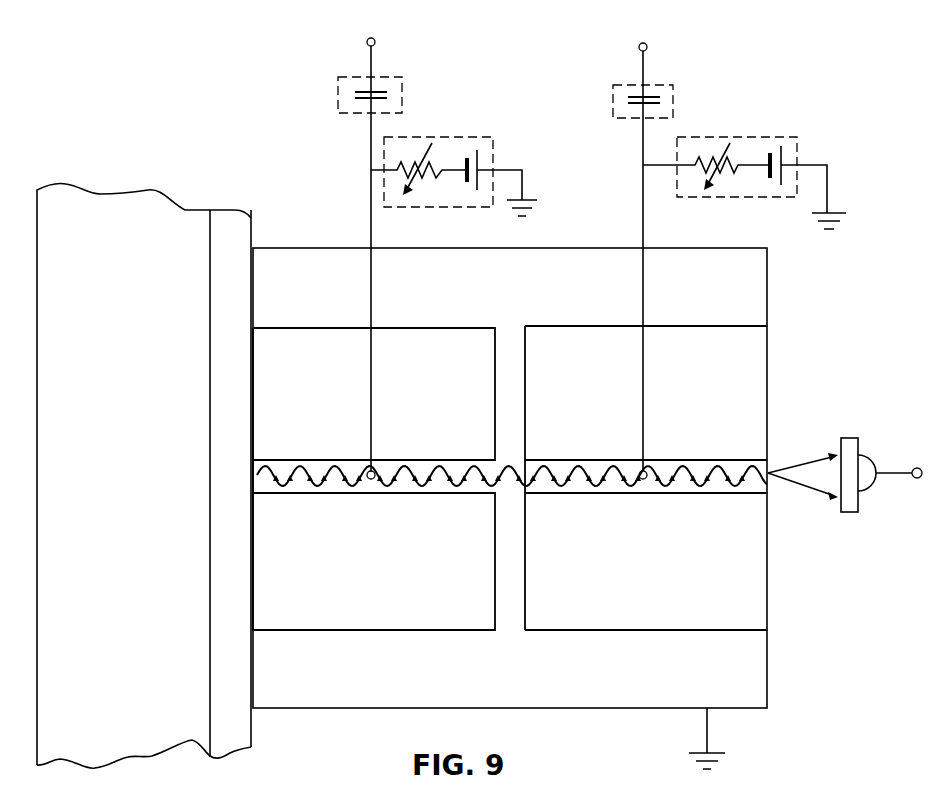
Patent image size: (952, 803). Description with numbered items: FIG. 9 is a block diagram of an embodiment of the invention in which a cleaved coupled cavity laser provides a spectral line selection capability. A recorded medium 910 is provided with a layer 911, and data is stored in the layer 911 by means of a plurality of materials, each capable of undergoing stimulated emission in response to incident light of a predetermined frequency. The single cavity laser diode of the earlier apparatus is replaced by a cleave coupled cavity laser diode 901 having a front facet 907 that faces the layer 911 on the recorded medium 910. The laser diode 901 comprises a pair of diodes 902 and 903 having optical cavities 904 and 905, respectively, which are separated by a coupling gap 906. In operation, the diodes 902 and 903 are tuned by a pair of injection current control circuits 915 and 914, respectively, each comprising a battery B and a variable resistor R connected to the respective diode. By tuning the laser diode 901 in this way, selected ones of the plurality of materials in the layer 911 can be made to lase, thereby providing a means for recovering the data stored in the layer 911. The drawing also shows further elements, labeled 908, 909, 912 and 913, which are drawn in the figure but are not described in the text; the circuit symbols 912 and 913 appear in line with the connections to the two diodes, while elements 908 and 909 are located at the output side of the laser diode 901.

The cleave coupled cavity laser diode 901 is at (768, 636).
The diode 902 is at (743, 545).
The diode 903 is at (472, 570).
The optical cavity 904 is at (690, 488).
The optical cavity 905 is at (477, 481).
The coupling gap 906 is at (508, 448).
The front facet 907 is at (257, 467).
The detector 908 is at (768, 462).
The output terminal 909 is at (866, 470).
The recorded medium 910 is at (122, 213).
The layer 911 is at (225, 229).
The capacitor 912 is at (397, 102).
The capacitor 913 is at (654, 90).
The injection current control circuit 914 is at (440, 138).
The injection current control circuit 915 is at (797, 138).